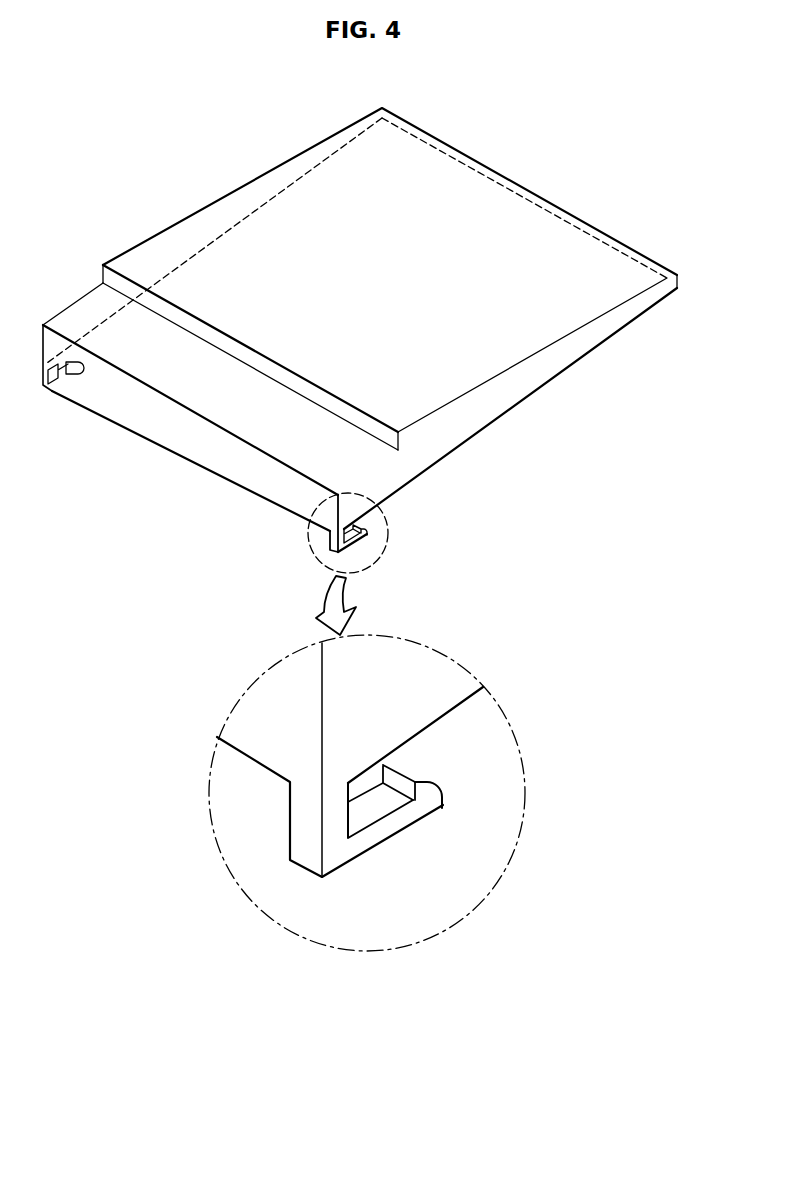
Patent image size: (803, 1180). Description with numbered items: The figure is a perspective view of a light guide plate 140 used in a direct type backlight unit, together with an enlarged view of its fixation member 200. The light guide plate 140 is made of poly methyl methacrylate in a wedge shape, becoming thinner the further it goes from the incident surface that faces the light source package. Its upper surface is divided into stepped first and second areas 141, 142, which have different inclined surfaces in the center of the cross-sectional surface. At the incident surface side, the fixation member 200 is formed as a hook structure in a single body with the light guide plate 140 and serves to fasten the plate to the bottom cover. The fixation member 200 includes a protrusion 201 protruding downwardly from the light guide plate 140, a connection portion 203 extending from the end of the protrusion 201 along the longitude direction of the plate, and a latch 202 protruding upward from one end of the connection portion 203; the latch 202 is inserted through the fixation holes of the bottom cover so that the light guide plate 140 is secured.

The light guide plate 140 is at (360, 330).
The first area 141 is at (201, 224).
The second area 142 is at (167, 378).
The fixation member 200 is at (368, 527).
The protrusion 201 is at (327, 830).
The latch 202 is at (428, 795).
The connection portion 203 is at (377, 833).